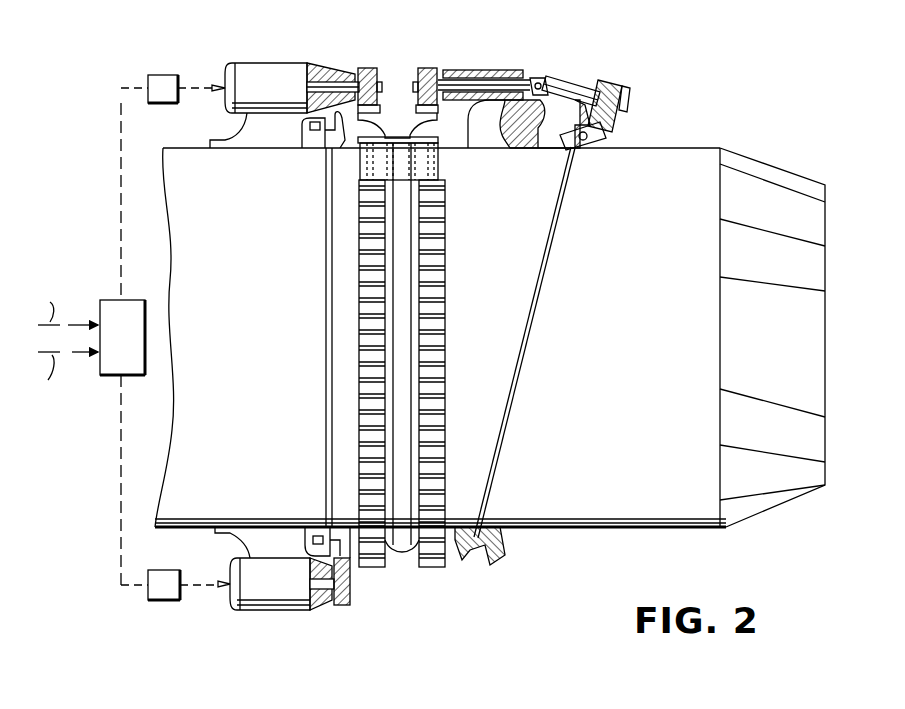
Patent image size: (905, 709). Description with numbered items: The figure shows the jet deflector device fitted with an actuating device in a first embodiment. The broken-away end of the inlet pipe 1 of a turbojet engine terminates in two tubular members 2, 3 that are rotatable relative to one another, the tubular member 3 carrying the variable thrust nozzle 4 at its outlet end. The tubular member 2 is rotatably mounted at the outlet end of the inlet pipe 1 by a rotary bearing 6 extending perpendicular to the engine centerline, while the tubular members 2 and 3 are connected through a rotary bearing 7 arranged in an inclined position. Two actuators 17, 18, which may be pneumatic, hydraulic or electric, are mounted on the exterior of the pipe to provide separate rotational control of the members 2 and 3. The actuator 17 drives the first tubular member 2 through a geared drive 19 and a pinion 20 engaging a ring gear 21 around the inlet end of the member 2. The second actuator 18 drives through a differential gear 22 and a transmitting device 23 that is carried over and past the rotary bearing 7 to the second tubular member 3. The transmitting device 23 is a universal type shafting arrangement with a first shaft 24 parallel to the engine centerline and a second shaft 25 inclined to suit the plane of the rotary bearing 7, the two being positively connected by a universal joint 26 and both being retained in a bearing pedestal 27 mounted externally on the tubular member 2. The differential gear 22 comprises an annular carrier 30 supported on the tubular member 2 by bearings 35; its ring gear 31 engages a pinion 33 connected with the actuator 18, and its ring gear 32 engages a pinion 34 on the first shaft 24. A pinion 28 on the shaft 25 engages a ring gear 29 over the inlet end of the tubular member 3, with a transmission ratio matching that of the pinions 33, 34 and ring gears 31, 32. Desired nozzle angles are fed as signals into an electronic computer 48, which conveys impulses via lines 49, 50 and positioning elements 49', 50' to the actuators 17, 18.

The inlet pipe 1 is at (190, 432).
The first tubular member 2 is at (483, 391).
The second tubular member 3 is at (643, 519).
The variable thrust nozzle 4 is at (788, 467).
The rotary bearing 6 is at (302, 128).
The rotary bearing 7 is at (604, 134).
The actuator 17 is at (266, 598).
The actuator 18 is at (280, 73).
The lower drive assembly 19 is at (378, 590).
The pinion 20 is at (342, 605).
The ring gear 21 is at (324, 152).
The differential gear 22 is at (402, 62).
The transmitting device 23 is at (546, 78).
The first shaft 24 is at (498, 72).
The second shaft 25 is at (596, 92).
The universal joint 26 is at (558, 80).
The bearing pedestal 27 is at (526, 135).
The pinion 28 is at (627, 98).
The ring gear 29 is at (494, 565).
The annular carrier 30 is at (398, 130).
The ring gear 31 is at (375, 567).
The ring gear 32 is at (434, 568).
The pinion 33 is at (365, 68).
The pinion 34 is at (429, 68).
The bearing 35 is at (378, 160).
The electronic computer 48 is at (112, 375).
The line 49 is at (92, 201).
The positioning element 49' is at (168, 601).
The line 50 is at (98, 480).
The positioning element 50' is at (162, 75).